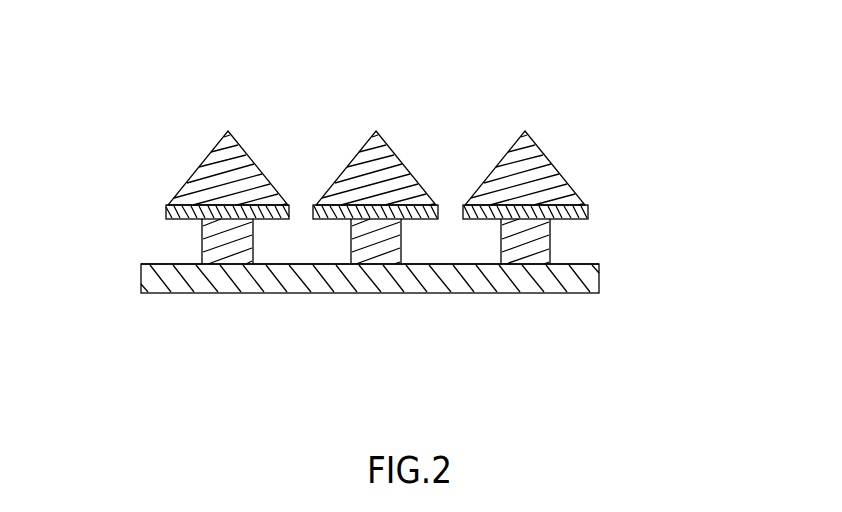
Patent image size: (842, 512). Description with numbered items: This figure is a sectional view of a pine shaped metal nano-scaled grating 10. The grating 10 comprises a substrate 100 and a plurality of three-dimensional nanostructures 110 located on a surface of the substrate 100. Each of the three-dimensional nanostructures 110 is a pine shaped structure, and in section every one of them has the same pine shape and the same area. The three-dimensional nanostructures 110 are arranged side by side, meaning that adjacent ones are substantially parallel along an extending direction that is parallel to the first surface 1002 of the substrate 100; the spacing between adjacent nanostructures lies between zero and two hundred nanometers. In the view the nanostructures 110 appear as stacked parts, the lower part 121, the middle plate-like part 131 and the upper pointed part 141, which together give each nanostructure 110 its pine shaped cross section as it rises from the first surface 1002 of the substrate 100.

The pine shaped metal nano-scaled grating 10 is at (302, 99).
The substrate 100 is at (437, 282).
The first surface 1002 is at (170, 264).
The three-dimensional nanostructures 110 is at (676, 95).
The pillar / light emitting chip 121 is at (533, 241).
The plate layer 131 is at (588, 210).
The triangular prism lens 141 is at (528, 152).